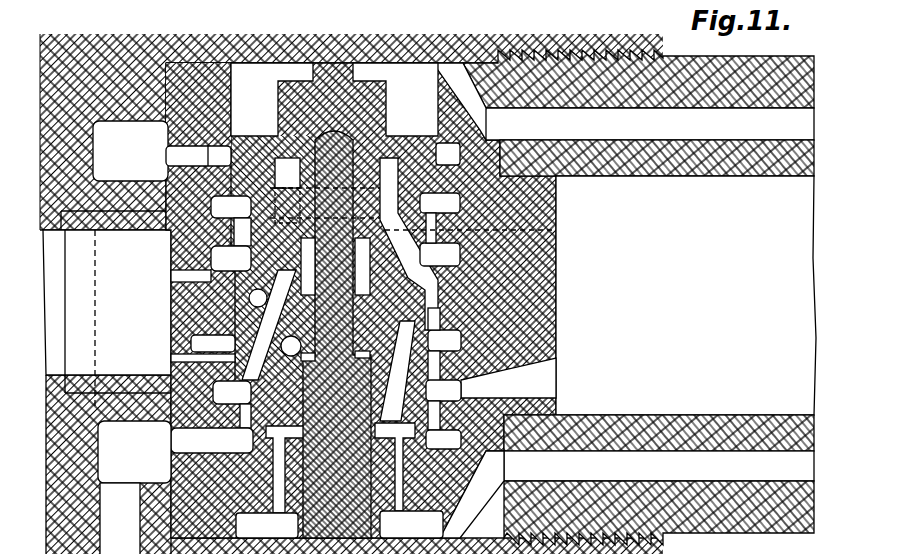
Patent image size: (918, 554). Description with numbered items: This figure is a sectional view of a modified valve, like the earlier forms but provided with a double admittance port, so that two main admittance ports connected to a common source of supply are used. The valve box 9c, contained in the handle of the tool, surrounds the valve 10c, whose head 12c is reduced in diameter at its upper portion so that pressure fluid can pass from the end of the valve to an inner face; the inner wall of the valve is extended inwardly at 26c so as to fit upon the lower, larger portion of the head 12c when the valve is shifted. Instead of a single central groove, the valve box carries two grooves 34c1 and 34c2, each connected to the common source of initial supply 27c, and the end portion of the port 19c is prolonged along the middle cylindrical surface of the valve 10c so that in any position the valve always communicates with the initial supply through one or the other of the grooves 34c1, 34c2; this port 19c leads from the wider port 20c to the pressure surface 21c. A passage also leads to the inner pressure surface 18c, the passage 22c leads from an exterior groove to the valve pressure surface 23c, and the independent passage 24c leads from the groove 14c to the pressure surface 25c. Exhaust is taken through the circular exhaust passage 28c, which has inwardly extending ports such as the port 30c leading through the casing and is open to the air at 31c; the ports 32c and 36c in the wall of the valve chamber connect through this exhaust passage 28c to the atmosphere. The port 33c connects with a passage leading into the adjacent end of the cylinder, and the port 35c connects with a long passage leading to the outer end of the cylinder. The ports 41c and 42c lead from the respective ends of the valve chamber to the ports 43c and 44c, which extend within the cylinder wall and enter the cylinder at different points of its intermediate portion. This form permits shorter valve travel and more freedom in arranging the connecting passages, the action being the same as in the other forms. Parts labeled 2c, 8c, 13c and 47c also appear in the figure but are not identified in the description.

The casing wall 2c is at (703, 400).
The threaded inlet fitting 8c is at (638, 71).
The valve box 9c is at (215, 84).
The valve 10c is at (267, 525).
The head of the plug 12c is at (287, 82).
The lower chamber 13c is at (411, 524).
The groove 14c is at (430, 229).
The inner pressure surface 18c is at (272, 150).
The port 19c is at (388, 258).
The wider port 20c is at (398, 330).
The pressure surface 21c is at (395, 497).
The passage 22c is at (250, 353).
The valve pressure surface 23c is at (272, 266).
The passage 24c is at (182, 266).
The pressure surface 25c is at (257, 382).
The inwardly extended portion of valve wall 26c is at (246, 495).
The initial supply passage 27c is at (116, 319).
The circular exhaust passage 28c is at (130, 151).
The exhaust port 30c is at (212, 440).
The exhaust opening 31c is at (121, 518).
The port 32c is at (444, 439).
The port 33c is at (491, 394).
The admittance groove 34c1 is at (182, 250).
The admittance groove 34c2 is at (205, 335).
The port 35c is at (440, 196).
The port 36c is at (430, 126).
The port 41c is at (470, 479).
The port 42c is at (468, 106).
The cylinder wall port 43c is at (659, 466).
The cylinder wall port 44c is at (647, 124).
The cavity 47c is at (545, 284).